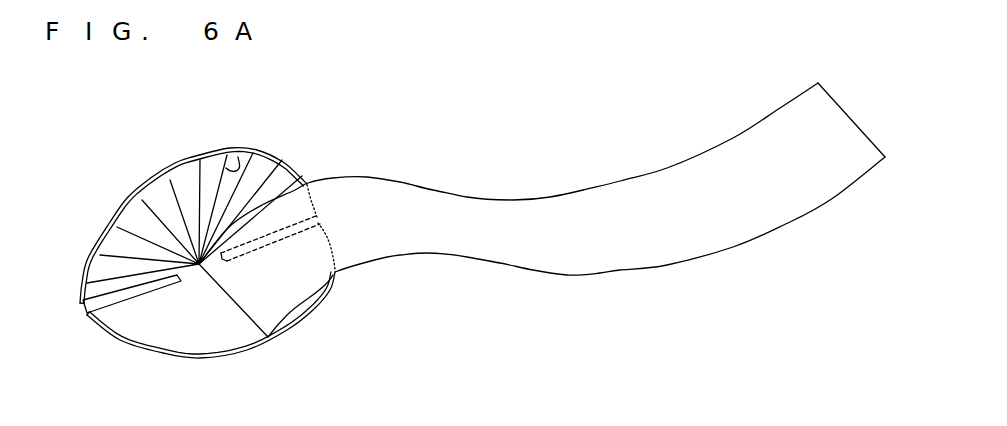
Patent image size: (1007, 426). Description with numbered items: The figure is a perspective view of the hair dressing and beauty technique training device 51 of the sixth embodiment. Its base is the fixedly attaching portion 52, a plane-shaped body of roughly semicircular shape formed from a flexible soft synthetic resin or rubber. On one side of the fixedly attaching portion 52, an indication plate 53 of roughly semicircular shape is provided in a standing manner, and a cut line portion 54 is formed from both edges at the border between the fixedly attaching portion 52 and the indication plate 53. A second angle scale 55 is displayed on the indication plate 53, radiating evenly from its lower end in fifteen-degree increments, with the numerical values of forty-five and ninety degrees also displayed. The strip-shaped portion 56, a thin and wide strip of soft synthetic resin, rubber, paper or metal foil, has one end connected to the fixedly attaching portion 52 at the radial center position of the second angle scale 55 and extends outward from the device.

The hair dressing and beauty technique training device 51 is at (582, 112).
The fixedly attaching portion 52 is at (215, 332).
The indication plate 53 is at (153, 180).
The cut line portion 54 is at (133, 292).
The second angle scale 55 is at (238, 157).
The strip-shaped portion 56 is at (448, 255).